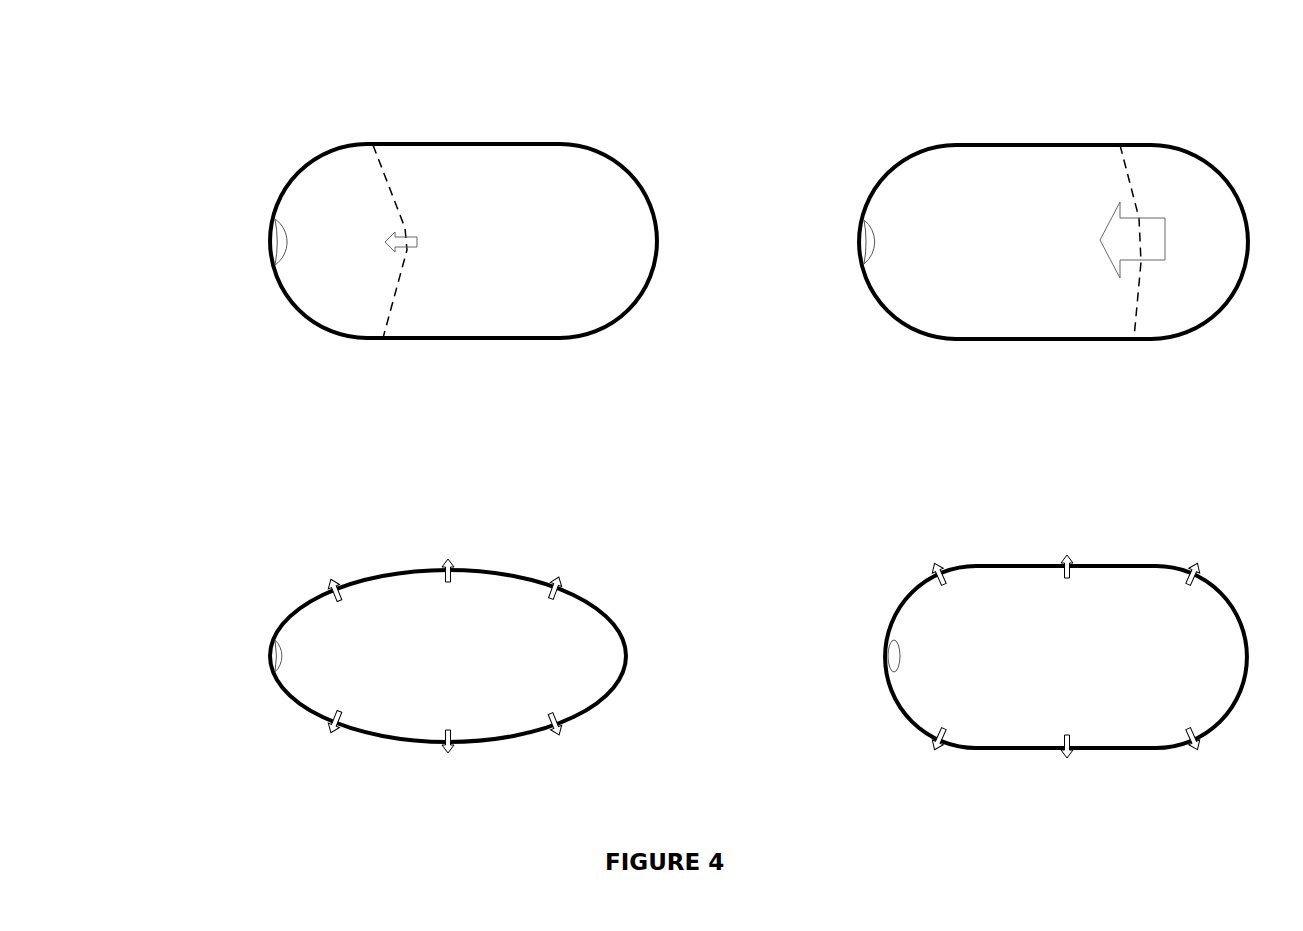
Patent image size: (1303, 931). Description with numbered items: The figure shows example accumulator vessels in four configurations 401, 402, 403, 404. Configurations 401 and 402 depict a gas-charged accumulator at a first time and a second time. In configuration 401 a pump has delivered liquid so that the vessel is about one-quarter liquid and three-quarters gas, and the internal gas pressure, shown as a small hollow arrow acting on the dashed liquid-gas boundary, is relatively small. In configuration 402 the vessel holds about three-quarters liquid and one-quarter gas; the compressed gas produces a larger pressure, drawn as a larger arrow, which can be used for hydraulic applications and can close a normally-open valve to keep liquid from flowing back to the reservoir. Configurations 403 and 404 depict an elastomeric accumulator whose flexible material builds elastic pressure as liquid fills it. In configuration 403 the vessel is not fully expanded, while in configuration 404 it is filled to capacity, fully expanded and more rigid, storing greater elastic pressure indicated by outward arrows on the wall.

The configuration 401 is at (113, 89).
The configuration 402 is at (702, 89).
The configuration 403 is at (113, 461).
The configuration 404 is at (702, 461).